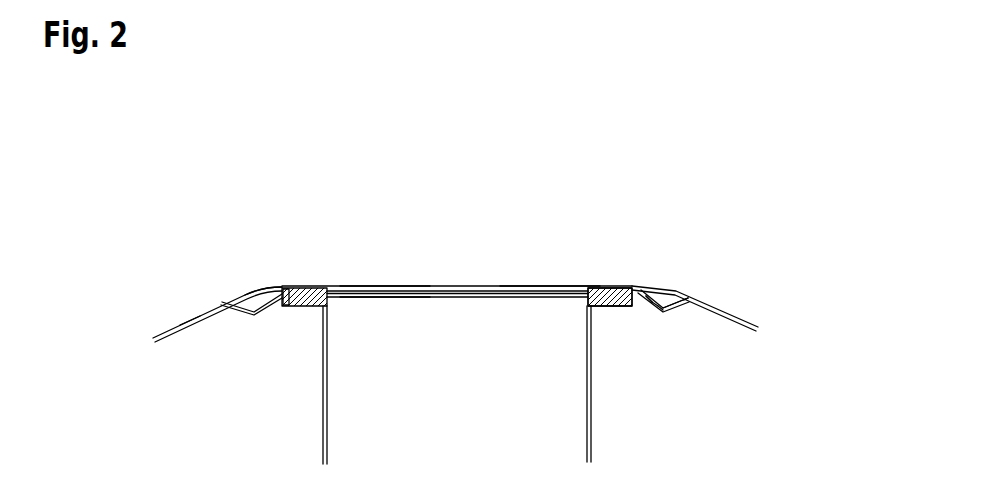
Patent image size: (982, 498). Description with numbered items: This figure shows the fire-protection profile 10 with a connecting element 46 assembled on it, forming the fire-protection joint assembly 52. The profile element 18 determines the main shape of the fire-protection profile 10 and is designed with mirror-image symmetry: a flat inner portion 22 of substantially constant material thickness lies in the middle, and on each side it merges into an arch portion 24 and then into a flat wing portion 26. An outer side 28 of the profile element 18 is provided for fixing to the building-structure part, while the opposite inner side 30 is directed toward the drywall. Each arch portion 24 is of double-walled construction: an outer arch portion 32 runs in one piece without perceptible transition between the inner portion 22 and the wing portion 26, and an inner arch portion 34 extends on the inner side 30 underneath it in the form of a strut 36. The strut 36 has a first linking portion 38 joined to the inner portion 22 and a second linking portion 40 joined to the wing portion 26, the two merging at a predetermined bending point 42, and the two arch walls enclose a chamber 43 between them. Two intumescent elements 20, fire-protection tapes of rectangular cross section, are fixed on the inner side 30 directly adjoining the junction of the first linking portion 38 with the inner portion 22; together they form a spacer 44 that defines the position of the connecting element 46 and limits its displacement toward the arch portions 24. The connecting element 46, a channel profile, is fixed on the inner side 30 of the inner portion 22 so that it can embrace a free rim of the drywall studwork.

The fire-protection profile 10 is at (546, 189).
The profile element 18 is at (236, 235).
The intumescent element 20 is at (300, 290).
The inner portion 22 is at (478, 286).
The arch portion 24 is at (226, 287).
The wing portion 26 is at (160, 329).
The outer side 28 is at (388, 273).
The inner side 30 is at (393, 300).
The outer arch portion 32 is at (656, 290).
The inner arch portion 34 is at (652, 322).
The strut 36 is at (649, 299).
The first linking portion 38 is at (655, 310).
The second linking portion 40 is at (684, 308).
The predetermined bending point 42 is at (660, 311).
The chamber 43 is at (680, 293).
The spacer 44 is at (283, 291).
The connecting element 46 is at (322, 412).
The fire-protection joint assembly 52 is at (185, 419).